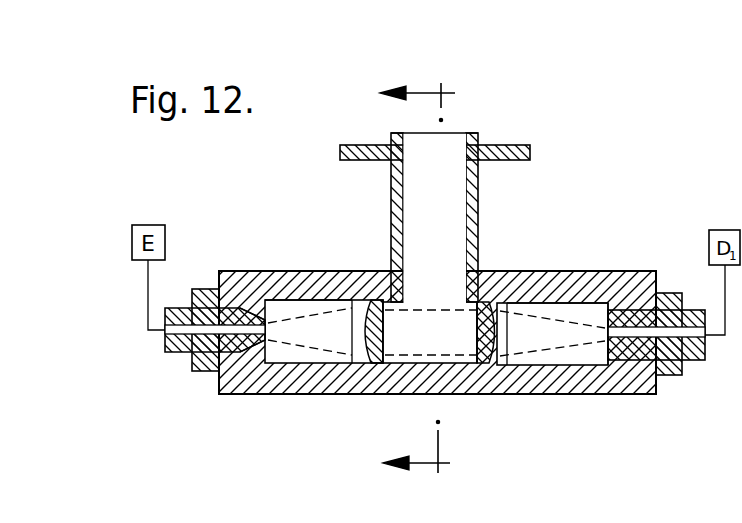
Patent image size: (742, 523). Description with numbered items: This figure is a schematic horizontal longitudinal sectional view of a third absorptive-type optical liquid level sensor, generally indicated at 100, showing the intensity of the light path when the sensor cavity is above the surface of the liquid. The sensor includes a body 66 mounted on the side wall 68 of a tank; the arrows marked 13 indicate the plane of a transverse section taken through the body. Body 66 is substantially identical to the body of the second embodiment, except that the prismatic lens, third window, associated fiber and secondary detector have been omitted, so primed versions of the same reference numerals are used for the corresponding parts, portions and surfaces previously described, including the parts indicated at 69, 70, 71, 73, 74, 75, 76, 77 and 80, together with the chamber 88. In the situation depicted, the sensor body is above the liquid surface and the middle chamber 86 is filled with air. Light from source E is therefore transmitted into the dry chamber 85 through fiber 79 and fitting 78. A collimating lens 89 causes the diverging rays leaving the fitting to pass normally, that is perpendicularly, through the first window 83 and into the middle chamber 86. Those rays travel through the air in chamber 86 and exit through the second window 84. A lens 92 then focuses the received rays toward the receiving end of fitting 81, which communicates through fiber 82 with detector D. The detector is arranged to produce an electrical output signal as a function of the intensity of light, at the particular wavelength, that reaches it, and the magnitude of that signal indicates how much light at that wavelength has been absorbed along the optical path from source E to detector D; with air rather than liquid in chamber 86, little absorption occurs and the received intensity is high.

The section line 13- 13 is at (438, 281).
The body 66 is at (268, 396).
The side wall 68 is at (500, 153).
The bottom wall of body 69 is at (322, 393).
The vertical tube 70 is at (391, 182).
The left collar 71 is at (215, 286).
The top wall of body 73 is at (311, 271).
The wall portion 74 is at (287, 300).
The chamber end wall 75 is at (601, 301).
The wall portion 76 is at (568, 300).
The nozzle tip 77 is at (240, 312).
The fitting 78 is at (180, 368).
The fiber 79 is at (150, 302).
The outlet fitting 80 is at (632, 394).
The fitting 81 is at (689, 294).
The fiber 82 is at (725, 335).
The first window 83 is at (380, 368).
The second window 84 is at (476, 334).
The dry chamber 85 is at (336, 343).
The middle chamber 86 is at (416, 343).
The second chamber 88 is at (544, 343).
The collimating lens 89 is at (365, 320).
The lens 92 is at (492, 366).
The absorptive-type optical liquid level sensor 100 is at (614, 173).